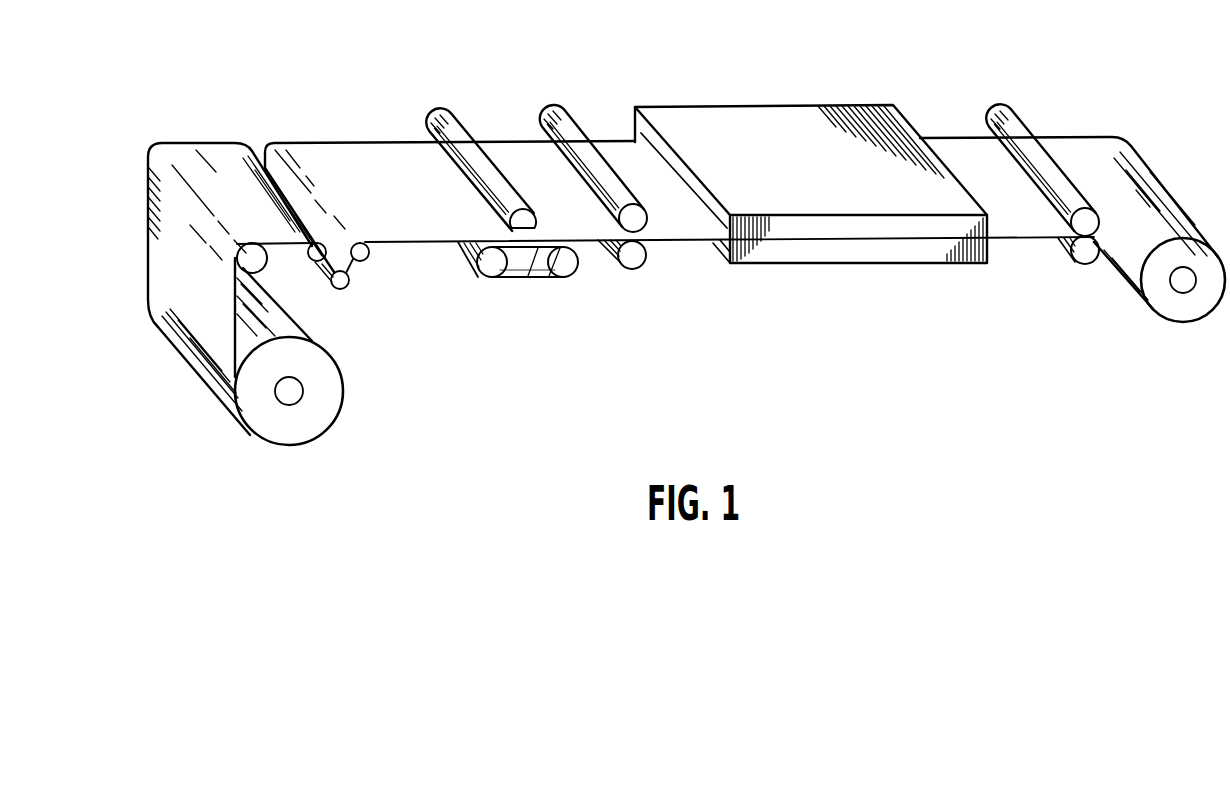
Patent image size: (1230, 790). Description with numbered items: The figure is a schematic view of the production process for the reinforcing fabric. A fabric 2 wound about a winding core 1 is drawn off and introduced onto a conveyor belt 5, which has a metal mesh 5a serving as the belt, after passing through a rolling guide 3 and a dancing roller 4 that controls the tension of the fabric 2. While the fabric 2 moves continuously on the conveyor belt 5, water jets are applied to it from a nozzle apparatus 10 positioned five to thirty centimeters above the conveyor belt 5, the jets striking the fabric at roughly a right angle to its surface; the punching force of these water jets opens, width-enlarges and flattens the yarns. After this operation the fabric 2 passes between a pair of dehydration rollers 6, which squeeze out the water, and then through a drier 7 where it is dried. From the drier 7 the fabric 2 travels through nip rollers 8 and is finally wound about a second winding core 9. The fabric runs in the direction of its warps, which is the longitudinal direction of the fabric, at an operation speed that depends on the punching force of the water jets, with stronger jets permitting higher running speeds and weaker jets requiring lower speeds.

The winding core 1 is at (289, 391).
The fabric 2 is at (193, 357).
The rolling guide 3 is at (265, 266).
The dancing roller 4 is at (344, 289).
The conveyor belt 5 is at (548, 290).
The metal mesh 5a is at (532, 268).
The dehydration rollers 6 is at (648, 275).
The drier 7 is at (855, 250).
The nip rollers 8 is at (1070, 272).
The winding core 9 is at (1183, 283).
The nozzle apparatus 10 is at (460, 130).